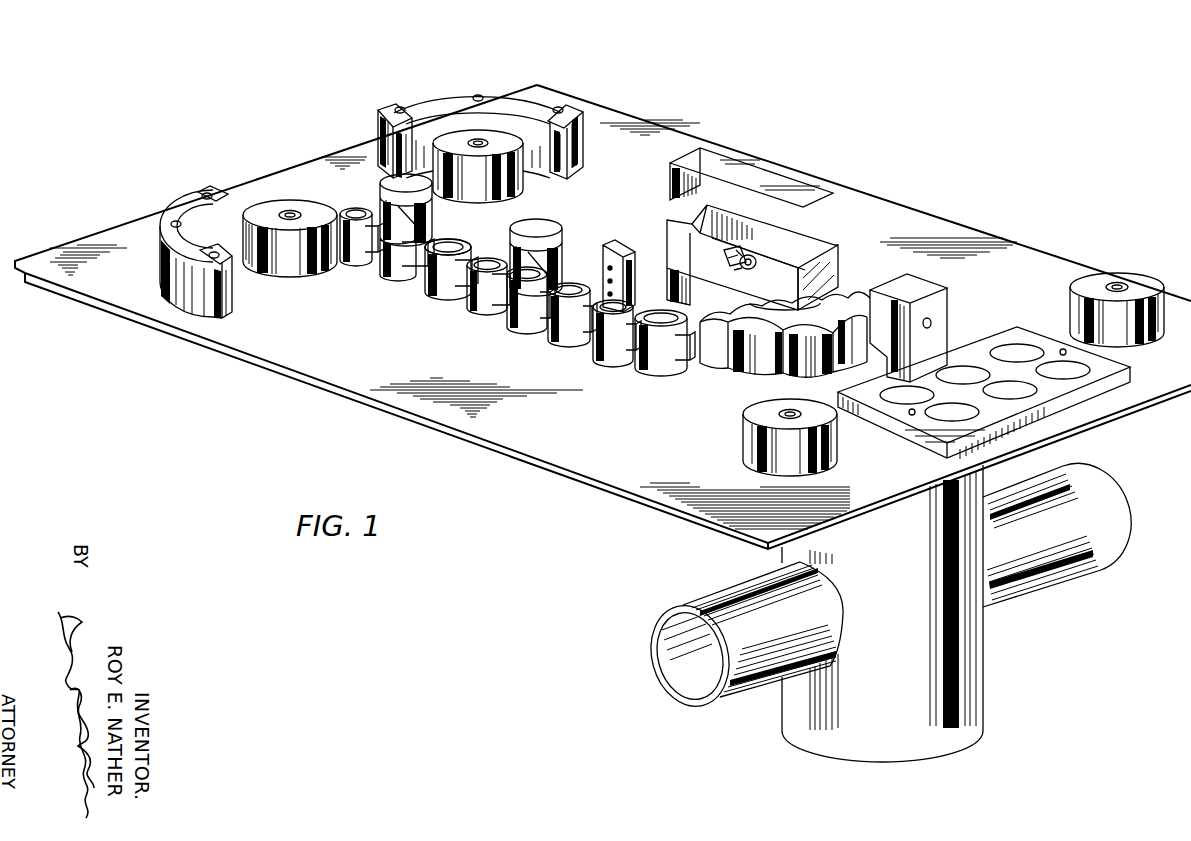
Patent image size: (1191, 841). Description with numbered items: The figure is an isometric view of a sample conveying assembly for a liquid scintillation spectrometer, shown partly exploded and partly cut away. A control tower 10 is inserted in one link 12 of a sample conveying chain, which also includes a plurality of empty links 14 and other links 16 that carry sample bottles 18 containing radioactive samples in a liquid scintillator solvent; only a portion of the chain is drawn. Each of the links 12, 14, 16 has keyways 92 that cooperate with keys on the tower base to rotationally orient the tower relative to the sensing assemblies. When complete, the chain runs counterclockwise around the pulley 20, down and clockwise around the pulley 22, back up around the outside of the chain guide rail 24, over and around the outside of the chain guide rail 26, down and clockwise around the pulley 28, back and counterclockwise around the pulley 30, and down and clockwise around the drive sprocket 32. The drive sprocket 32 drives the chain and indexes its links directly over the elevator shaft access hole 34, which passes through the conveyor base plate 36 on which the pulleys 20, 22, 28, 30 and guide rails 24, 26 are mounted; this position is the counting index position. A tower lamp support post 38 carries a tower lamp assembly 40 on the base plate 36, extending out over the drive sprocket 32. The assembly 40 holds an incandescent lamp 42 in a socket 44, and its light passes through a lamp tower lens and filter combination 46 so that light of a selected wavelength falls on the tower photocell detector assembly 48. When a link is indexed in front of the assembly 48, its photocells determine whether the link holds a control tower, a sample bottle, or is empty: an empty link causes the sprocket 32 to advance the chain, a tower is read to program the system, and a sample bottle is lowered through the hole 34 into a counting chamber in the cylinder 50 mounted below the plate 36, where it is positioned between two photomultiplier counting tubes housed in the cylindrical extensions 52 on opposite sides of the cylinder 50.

The control tower 10 is at (628, 246).
The link 12 is at (614, 362).
The empty links 14 is at (357, 266).
The links 16 is at (402, 288).
The sample bottles 18 is at (434, 214).
The pulley 20 is at (292, 212).
The pulley 22 is at (762, 408).
The chain guide rail 24 is at (203, 194).
The chain guide rail 26 is at (428, 97).
The pulley 28 is at (1124, 278).
The pulley 30 is at (518, 158).
The drive sprocket 32 is at (796, 323).
The elevator shaft access hole 34 is at (858, 372).
The conveyor base plate 36 is at (614, 489).
The tower lamp support post 38 is at (670, 274).
The tower lamp assembly 40 is at (766, 251).
The incandescent lamp 42 is at (757, 262).
The socket 44 is at (734, 252).
The lamp tower lens and filter combination 46 is at (818, 258).
The tower photocell detector assembly 48 is at (930, 285).
The cylinder 50 is at (986, 654).
The cylindrical extensions 52 is at (714, 590).
The keyways 92 is at (472, 244).